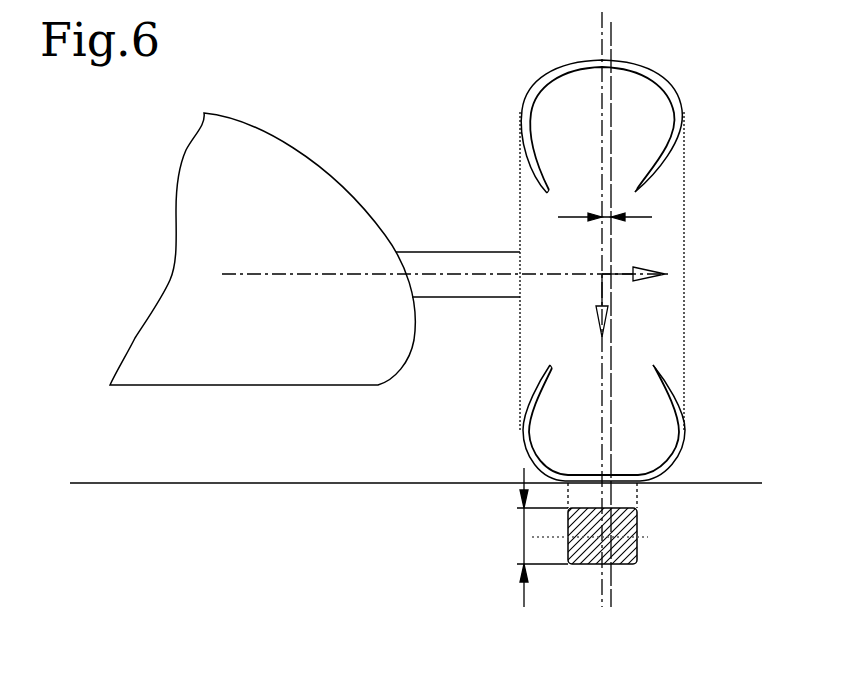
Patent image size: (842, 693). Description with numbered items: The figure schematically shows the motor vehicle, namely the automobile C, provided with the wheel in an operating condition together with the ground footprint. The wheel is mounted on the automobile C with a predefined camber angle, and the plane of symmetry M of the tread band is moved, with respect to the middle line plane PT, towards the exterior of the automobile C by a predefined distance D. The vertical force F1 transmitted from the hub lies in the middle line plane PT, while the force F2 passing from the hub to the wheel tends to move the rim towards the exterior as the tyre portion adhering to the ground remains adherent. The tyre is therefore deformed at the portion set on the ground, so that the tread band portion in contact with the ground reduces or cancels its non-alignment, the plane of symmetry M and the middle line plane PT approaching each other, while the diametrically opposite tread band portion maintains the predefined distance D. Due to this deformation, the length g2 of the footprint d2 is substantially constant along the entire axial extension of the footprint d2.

The automobile C is at (305, 137).
The middle line plane PT is at (602, 33).
The plane of symmetry M is at (611, 53).
The predefined distance D is at (642, 216).
The force F2 is at (632, 270).
The vertical force F1 is at (604, 303).
The footprint d2 is at (637, 535).
The length of the footprint g2 is at (520, 538).